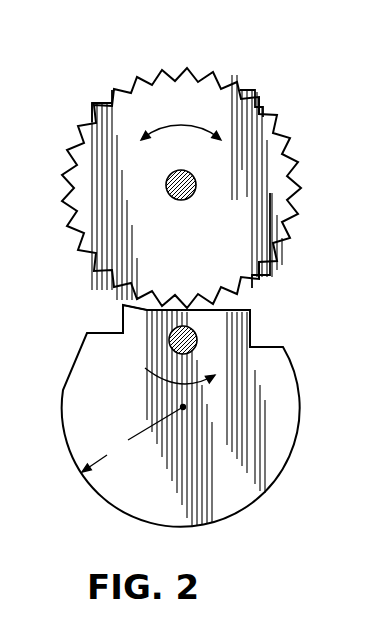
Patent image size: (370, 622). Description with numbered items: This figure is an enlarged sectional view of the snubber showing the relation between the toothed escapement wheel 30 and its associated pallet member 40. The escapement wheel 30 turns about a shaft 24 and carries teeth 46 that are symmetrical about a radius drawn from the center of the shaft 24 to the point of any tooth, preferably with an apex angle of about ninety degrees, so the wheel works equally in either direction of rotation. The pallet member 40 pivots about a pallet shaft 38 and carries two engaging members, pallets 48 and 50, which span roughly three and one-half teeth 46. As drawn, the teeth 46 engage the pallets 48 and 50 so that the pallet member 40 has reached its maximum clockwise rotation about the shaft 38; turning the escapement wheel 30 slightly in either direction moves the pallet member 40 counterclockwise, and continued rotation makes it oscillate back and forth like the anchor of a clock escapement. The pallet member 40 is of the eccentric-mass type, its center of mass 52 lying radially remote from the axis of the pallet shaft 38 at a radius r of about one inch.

The shaft 24 is at (178, 200).
The escapement wheel 30 is at (178, 166).
The pallet shaft 38 is at (197, 344).
The pallet member 40 is at (283, 415).
The teeth 46 is at (277, 107).
The pallet 48 is at (125, 296).
The pallet 50 is at (240, 304).
The center of mass 52 is at (185, 406).